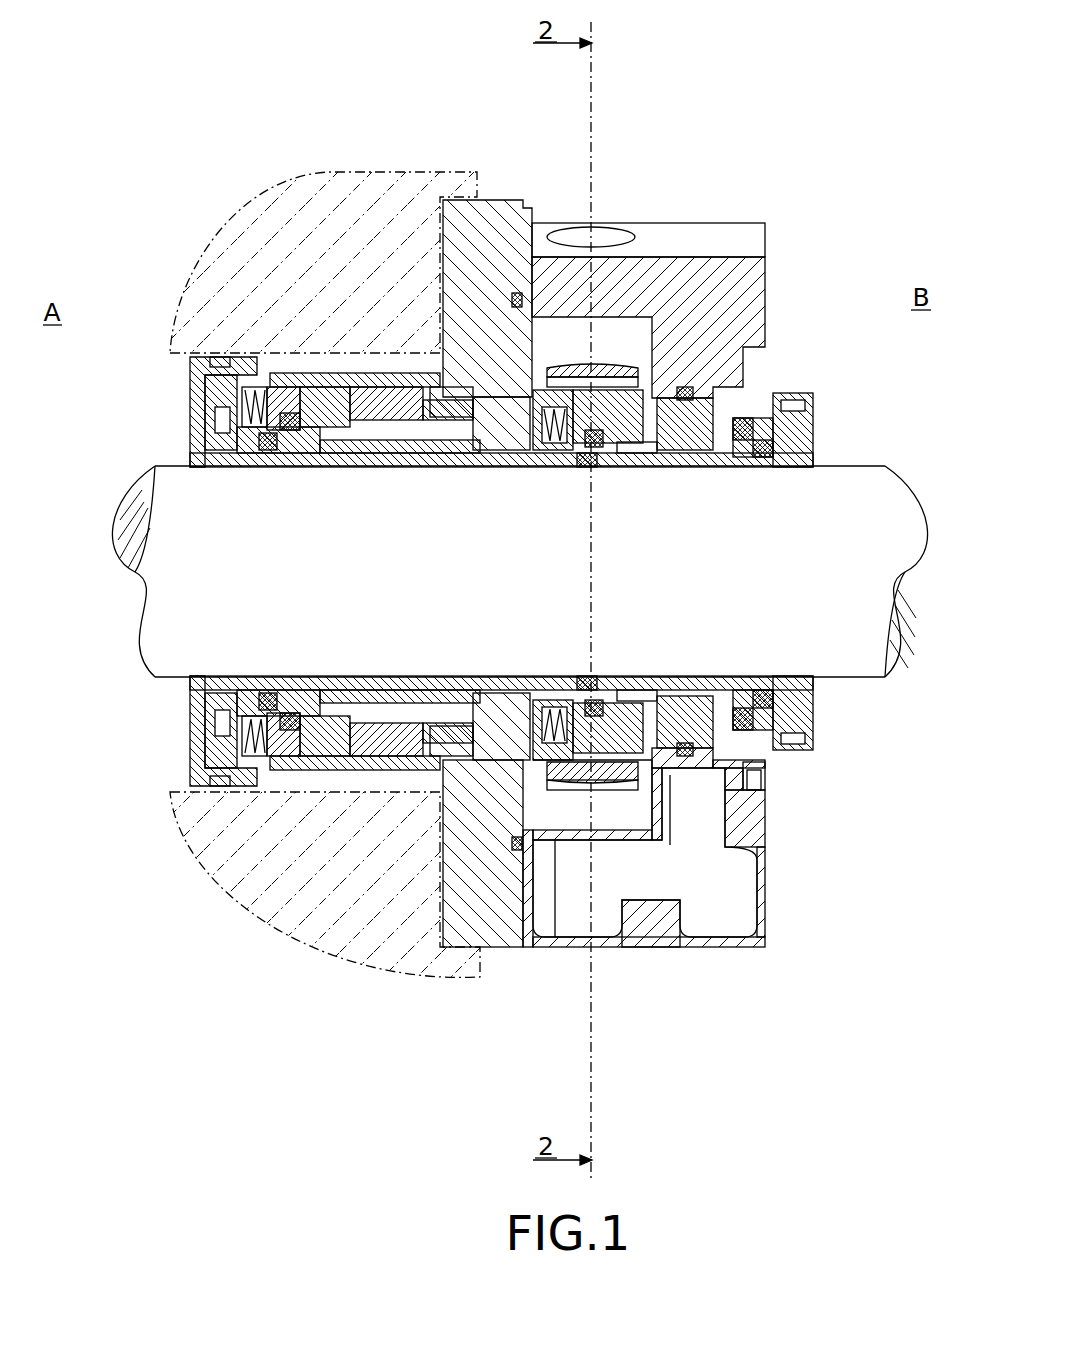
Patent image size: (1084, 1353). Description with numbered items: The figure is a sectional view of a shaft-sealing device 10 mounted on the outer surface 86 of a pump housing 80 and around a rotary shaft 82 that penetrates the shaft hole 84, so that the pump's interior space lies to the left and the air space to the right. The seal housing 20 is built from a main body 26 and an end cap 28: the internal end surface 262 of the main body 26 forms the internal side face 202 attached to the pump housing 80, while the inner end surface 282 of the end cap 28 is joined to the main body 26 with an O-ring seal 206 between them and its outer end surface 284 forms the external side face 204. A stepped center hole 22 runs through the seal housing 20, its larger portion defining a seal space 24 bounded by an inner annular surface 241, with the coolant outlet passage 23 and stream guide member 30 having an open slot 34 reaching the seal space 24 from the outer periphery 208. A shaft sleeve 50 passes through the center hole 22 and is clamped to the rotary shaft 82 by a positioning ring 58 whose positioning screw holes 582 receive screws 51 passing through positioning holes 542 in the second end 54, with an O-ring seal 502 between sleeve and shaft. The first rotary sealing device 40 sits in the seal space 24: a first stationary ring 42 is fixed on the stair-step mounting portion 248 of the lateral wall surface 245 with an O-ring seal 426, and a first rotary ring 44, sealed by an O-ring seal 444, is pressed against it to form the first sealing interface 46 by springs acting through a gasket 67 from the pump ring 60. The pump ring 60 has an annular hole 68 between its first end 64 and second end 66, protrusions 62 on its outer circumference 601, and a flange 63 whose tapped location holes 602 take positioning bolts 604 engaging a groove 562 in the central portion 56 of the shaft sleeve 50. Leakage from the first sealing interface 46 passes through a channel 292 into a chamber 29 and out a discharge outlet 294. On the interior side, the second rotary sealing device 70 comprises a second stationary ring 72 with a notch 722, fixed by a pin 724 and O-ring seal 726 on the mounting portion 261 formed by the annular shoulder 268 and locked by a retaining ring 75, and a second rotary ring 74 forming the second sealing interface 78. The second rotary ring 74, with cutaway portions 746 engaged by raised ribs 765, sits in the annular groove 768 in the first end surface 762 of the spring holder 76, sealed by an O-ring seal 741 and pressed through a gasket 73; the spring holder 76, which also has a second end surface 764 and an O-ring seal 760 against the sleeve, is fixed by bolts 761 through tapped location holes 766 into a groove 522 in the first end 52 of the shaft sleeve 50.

The shaft-sealing device 10 is at (766, 196).
The seal housing 20 is at (766, 236).
The center hole 22 is at (472, 742).
The coolant outlet passage 23 is at (600, 240).
The seal space 24 is at (718, 328).
The main body 26 is at (482, 832).
The end cap 28 is at (764, 892).
The chamber 29 is at (715, 856).
The stream guide member 30 is at (624, 300).
The open slot 34 is at (642, 350).
The first rotary sealing device 40 is at (669, 478).
The first stationary ring 42 is at (722, 425).
The first rotary ring 44 is at (642, 450).
The first sealing interface 46 is at (690, 452).
The shaft sleeve 50 is at (688, 700).
The screws 51 is at (804, 406).
The first end 52 is at (196, 458).
The second end 54 is at (788, 458).
The central portion 56 is at (430, 452).
The positioning ring 58 is at (802, 395).
The pump ring 60 is at (574, 370).
The protrusions 62 is at (612, 398).
The flange 63 is at (562, 722).
The first end 64 is at (532, 702).
The second end 66 is at (632, 738).
The gasket 67 is at (642, 762).
The annular hole 68 is at (600, 702).
The second rotary sealing device 70 is at (362, 468).
The second stationary ring 72 is at (385, 430).
The gasket 73 is at (248, 738).
The second rotary ring 74 is at (302, 452).
The retaining ring 75 is at (322, 712).
The spring holder 76 is at (198, 428).
The second sealing interface 78 is at (345, 455).
The pump housing 80 is at (200, 272).
The rotary shaft 82 is at (900, 490).
The shaft hole 84 is at (228, 300).
The outer surface 86 is at (340, 392).
The internal side face 202 is at (392, 395).
The external side face 204 is at (742, 790).
The O-ring seal 206 is at (450, 762).
The outer periphery 208 is at (752, 822).
The inner annular surface 241 is at (702, 940).
The lateral wall surface 245 is at (692, 305).
The mounting portion 248 is at (692, 348).
The mounting portion 261 is at (406, 762).
The internal end surface 262 is at (460, 373).
The annular shoulder 268 is at (322, 395).
The inner end surface 282 is at (507, 765).
The outer end surface 284 is at (745, 812).
The channel 292 is at (772, 702).
The discharge outlet 294 is at (648, 937).
The O-ring seal 426 is at (722, 746).
The O-ring seal 444 is at (602, 442).
The O-ring seal 502 is at (566, 452).
The groove 522 is at (222, 464).
The positioning holes 542 is at (782, 456).
The groove 562 is at (503, 452).
The positioning screw holes 582 is at (772, 430).
The outer circumference 601 is at (650, 372).
The tapped location holes 602 is at (500, 385).
The positioning bolts 604 is at (458, 432).
The notch 722 is at (390, 722).
The pin 724 is at (432, 730).
The O-ring seal 726 is at (340, 745).
The O-ring seal 741 is at (270, 775).
The cutaway portions 746 is at (302, 782).
The O-ring seal 760 is at (265, 452).
The bolts 761 is at (222, 692).
The first end surface 762 is at (290, 395).
The second end surface 764 is at (196, 372).
The raised ribs 765 is at (296, 702).
The tapped location holes 766 is at (206, 398).
The annular groove 768 is at (250, 392).